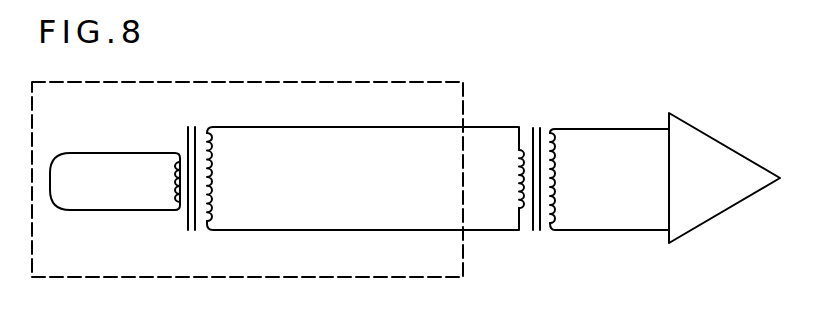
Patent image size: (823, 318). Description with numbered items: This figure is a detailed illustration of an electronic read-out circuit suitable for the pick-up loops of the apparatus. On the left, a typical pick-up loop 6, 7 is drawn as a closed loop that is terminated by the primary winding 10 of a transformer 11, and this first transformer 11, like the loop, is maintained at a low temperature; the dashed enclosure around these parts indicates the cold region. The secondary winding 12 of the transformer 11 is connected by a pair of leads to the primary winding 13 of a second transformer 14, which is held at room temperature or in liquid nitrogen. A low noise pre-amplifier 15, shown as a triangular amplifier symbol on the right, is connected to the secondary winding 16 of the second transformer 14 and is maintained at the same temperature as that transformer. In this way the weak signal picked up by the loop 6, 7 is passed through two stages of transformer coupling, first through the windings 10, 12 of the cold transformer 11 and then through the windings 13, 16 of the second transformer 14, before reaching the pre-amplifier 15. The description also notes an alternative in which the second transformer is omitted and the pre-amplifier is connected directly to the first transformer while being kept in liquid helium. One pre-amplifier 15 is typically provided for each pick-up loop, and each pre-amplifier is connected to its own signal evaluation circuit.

The pick-up loop 6 is at (115, 153).
The pick-up loop 7 is at (96, 153).
The primary winding 10 is at (168, 186).
The transformer 11 is at (192, 232).
The secondary winding 12 is at (212, 190).
The primary winding 13 is at (520, 178).
The second transformer 14 is at (537, 232).
The low noise pre-amplifier 15 is at (701, 226).
The secondary winding 16 is at (556, 185).